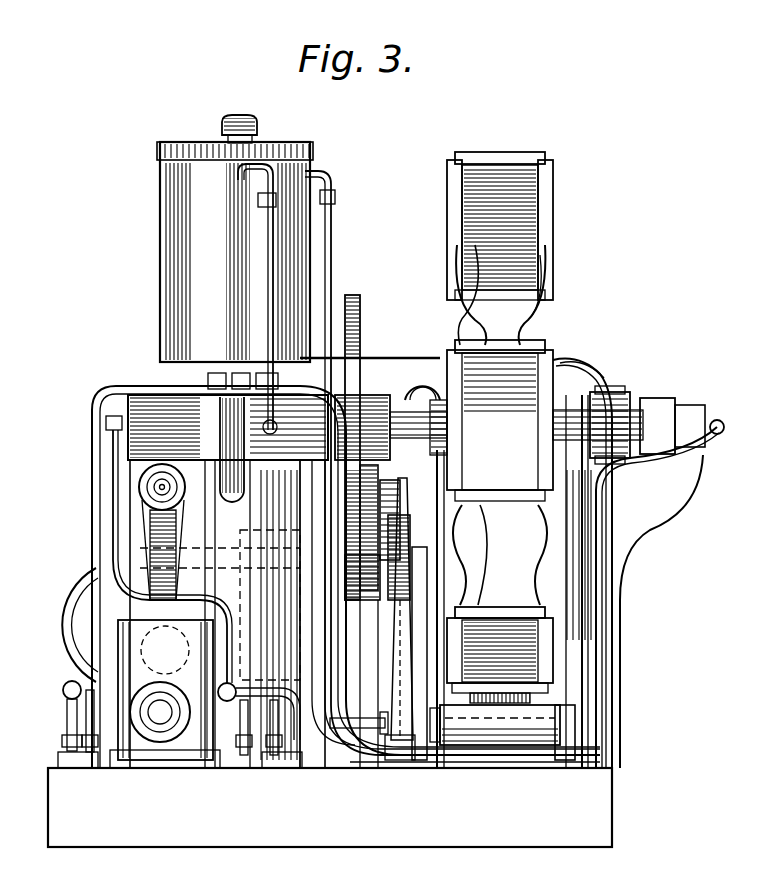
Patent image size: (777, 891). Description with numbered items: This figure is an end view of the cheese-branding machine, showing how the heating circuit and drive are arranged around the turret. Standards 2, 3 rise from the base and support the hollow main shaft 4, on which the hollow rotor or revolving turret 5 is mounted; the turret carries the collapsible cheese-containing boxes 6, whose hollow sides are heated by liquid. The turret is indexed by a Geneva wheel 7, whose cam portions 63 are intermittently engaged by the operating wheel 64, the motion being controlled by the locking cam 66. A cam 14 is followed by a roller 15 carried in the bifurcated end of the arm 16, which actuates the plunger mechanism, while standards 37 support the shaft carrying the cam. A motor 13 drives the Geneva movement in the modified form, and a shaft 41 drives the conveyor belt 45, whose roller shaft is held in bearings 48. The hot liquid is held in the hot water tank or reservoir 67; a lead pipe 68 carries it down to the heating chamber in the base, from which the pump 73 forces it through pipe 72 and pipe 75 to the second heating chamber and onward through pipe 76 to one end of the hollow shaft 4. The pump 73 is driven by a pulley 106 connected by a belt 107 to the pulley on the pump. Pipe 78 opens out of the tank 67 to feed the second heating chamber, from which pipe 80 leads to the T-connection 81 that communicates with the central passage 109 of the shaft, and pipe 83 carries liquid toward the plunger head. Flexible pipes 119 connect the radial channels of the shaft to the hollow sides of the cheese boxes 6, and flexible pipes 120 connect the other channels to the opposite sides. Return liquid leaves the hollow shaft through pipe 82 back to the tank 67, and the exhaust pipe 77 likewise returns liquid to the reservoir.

The standard 2 is at (632, 553).
The standard 3 is at (300, 645).
The hollow main shaft 4 is at (406, 448).
The hollow rotor or revolving turret 5 is at (442, 462).
The collapsible cheese-containing box 6 is at (520, 205).
The Geneva wheel 7 is at (363, 338).
The motor 13 is at (68, 600).
The cam 14 is at (384, 606).
The roller 15 is at (418, 518).
The arm 16 is at (395, 655).
The standard 37 is at (405, 680).
The shaft 41 is at (372, 702).
The conveyor belt 45 is at (475, 748).
The bearing 48 is at (566, 760).
The cam portion 63 is at (398, 500).
The operating wheel 64 is at (378, 492).
The locking cam 66 is at (372, 598).
The hot water tank or reservoir 67 is at (178, 243).
The lead pipe 68 is at (92, 550).
The pipe 72 is at (66, 712).
The pump 73 is at (118, 668).
The pipe 75 is at (280, 740).
The pipe 76 is at (342, 487).
The exhaust pipe 77 is at (265, 275).
The pipe 78 is at (418, 765).
The pipe 80 is at (640, 462).
The T-connection 81 is at (720, 434).
The pipe 82 is at (348, 262).
The pipe 83 is at (600, 372).
The pulley 106 is at (138, 487).
The belt 107 is at (140, 535).
The central passage 109 is at (157, 738).
The flexible pipe 119 is at (553, 268).
The flexible pipe 120 is at (440, 272).